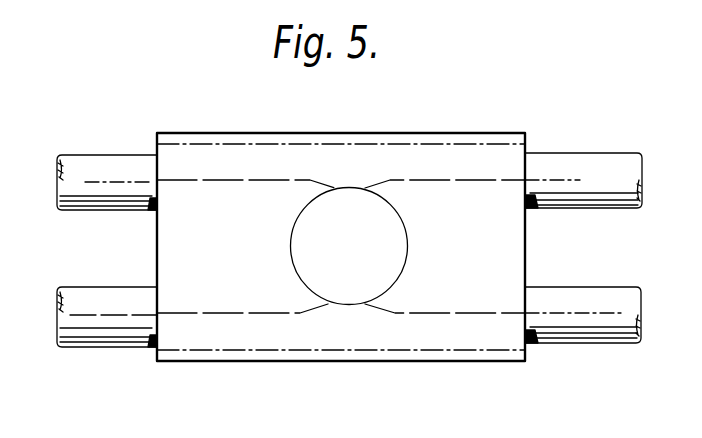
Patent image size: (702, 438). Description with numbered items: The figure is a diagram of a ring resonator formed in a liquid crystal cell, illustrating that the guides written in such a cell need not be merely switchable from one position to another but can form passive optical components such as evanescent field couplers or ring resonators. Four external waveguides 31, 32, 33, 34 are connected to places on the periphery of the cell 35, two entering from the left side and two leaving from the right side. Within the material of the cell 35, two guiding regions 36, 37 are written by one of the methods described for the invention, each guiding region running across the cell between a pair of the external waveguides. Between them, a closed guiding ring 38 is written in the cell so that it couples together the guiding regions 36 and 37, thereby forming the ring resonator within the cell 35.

The external waveguide 31 is at (88, 162).
The external waveguide 32 is at (112, 338).
The external waveguide 33 is at (592, 153).
The external waveguide 34 is at (598, 287).
The cell 35 is at (412, 345).
The guiding region 36 is at (220, 180).
The guiding region 37 is at (210, 315).
The closed guiding ring 38 is at (331, 192).